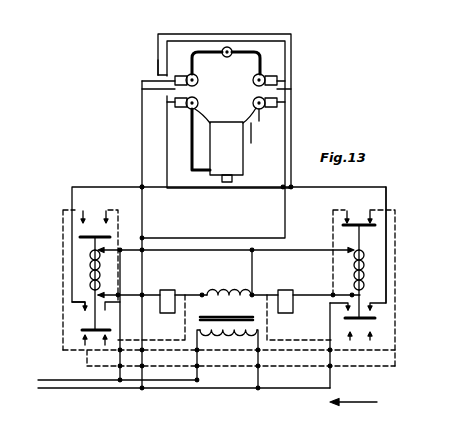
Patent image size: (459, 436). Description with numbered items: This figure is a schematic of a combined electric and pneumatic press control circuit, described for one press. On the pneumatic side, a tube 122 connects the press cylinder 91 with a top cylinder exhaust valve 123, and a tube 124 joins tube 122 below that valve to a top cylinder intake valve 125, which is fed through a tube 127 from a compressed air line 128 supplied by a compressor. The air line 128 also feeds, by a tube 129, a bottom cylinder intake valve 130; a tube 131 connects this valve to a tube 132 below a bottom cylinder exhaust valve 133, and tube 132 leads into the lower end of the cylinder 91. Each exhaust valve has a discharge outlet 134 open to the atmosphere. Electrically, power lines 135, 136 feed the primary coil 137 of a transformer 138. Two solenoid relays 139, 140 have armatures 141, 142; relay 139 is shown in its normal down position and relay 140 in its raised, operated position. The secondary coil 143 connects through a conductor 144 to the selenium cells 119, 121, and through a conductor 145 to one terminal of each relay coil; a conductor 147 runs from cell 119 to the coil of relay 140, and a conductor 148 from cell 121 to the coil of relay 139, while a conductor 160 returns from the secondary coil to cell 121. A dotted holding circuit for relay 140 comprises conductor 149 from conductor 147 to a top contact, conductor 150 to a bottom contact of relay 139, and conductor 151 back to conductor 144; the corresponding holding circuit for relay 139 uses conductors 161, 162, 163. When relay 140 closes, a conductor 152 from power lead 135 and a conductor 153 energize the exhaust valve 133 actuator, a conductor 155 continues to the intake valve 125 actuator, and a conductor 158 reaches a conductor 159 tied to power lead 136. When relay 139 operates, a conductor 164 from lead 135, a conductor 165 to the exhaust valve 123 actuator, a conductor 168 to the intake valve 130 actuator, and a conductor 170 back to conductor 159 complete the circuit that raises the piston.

The press cylinder 91 is at (243, 166).
The selenium cell 119 is at (291, 289).
The selenium cell 121 is at (170, 290).
The tube 122 is at (250, 141).
The top cylinder exhaust valve 123 is at (253, 106).
The tube 124 is at (291, 89).
The top cylinder intake valve 125 is at (253, 82).
The tube 127 is at (262, 64).
The compressed air line 128 is at (238, 29).
The tube 129 is at (199, 57).
The bottom cylinder intake valve 130 is at (198, 78).
The tube 131 is at (142, 89).
The tube 132 is at (191, 134).
The bottom cylinder exhaust valve 133 is at (198, 102).
The discharge outlet 134 is at (260, 108).
The power line 135 is at (64, 390).
The power line 136 is at (64, 380).
The primary coil 137 is at (231, 338).
The transformer 138 is at (234, 290).
The relay 139 is at (92, 264).
The relay 140 is at (364, 273).
The armature 141 is at (93, 327).
The armature 142 is at (362, 297).
The secondary coil 143 is at (228, 295).
The conductor 144 is at (253, 293).
The conductor 145 is at (292, 249).
The conductor 147 is at (320, 297).
The conductor 148 is at (151, 317).
The conductor 149 is at (333, 224).
The conductor 150 is at (396, 228).
The conductor 151 is at (186, 329).
The conductor 152 is at (335, 380).
The conductor 153 is at (388, 196).
The conductor 155 is at (160, 66).
The conductor 158 is at (289, 118).
The conductor 159 is at (145, 208).
The conductor 160 is at (201, 292).
The conductor 161 is at (140, 193).
The conductor 162 is at (62, 233).
The conductor 163 is at (285, 343).
The conductor 164 is at (110, 371).
The conductor 165 is at (80, 176).
The conductor 168 is at (291, 45).
The conductor 170 is at (142, 145).